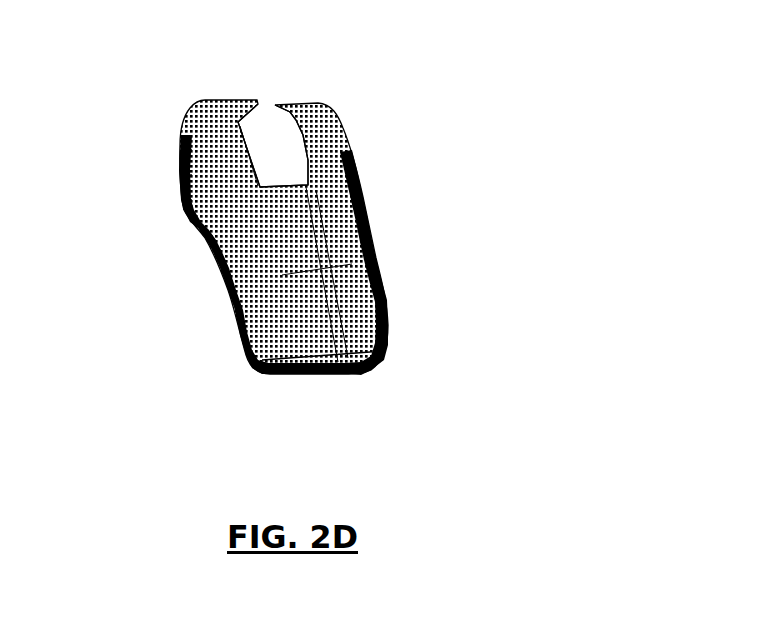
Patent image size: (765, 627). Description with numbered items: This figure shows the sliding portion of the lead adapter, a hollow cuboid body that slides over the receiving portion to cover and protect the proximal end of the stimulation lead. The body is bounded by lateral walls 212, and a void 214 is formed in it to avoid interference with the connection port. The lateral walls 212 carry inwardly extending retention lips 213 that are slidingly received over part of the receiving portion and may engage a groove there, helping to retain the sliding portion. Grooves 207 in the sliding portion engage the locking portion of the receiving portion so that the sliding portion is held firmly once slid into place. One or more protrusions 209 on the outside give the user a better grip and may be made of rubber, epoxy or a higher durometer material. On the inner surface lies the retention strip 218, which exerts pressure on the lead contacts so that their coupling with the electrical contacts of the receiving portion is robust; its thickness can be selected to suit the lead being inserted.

The grooves 207 is at (352, 264).
The protrusions 209 is at (192, 173).
The lateral walls 212 is at (252, 318).
The retention lips 213 is at (315, 133).
The void 214 is at (256, 122).
The retention strip 218 is at (328, 352).